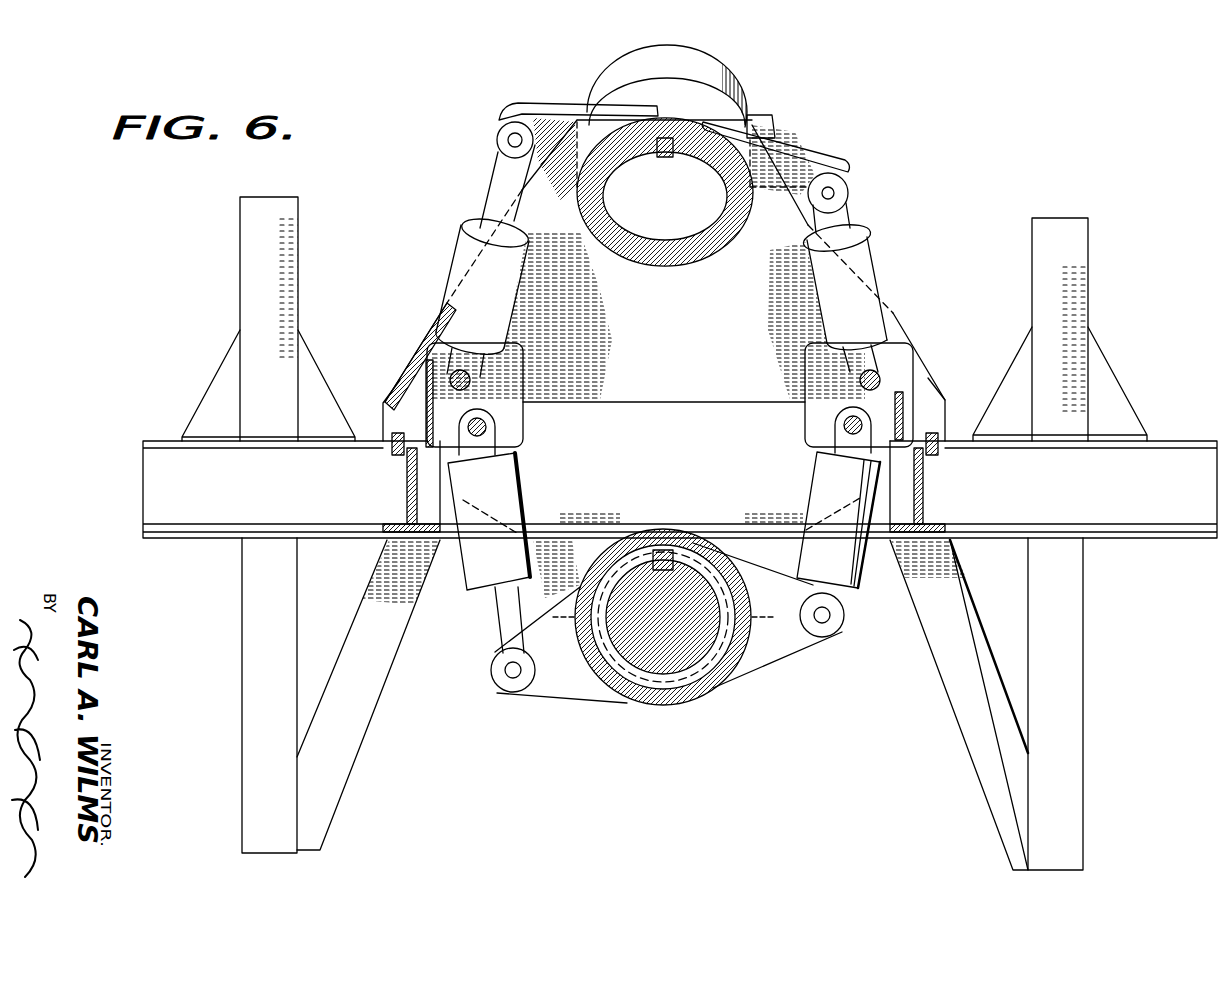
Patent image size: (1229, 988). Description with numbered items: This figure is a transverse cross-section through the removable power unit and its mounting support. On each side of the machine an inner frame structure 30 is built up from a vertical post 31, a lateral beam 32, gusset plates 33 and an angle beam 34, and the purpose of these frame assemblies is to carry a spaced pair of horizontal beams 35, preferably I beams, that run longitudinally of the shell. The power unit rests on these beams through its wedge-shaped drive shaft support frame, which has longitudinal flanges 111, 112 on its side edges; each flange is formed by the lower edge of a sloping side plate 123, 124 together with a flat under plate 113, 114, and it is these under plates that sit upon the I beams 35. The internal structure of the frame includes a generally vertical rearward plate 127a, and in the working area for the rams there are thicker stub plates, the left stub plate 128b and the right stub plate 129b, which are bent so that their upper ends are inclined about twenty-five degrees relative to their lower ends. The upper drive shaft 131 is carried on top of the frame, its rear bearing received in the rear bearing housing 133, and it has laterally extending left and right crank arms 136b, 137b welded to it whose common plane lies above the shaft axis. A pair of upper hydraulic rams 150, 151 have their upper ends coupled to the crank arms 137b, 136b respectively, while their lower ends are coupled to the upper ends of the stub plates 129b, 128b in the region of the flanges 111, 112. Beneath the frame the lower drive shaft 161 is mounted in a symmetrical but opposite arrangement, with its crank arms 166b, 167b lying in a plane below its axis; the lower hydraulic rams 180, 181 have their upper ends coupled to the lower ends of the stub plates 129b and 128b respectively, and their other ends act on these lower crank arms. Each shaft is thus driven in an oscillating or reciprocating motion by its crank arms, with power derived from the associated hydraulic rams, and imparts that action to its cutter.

The inner frame structure 30 is at (200, 270).
The vertical post 31 is at (1055, 252).
The lateral beam 32 is at (148, 497).
The gusset plate 33 is at (313, 428).
The angle beam 34 is at (320, 797).
The horizontal beam 35 is at (410, 508).
The longitudinal flange 111 is at (388, 413).
The longitudinal flange 112 is at (918, 398).
The under plate 113 is at (415, 472).
The under plate 114 is at (900, 450).
The sloping side plate 123 is at (440, 343).
The sloping side plate 124 is at (890, 340).
The rearward plate 127a is at (738, 350).
The stub plate 128b is at (802, 423).
The stub plate 129b is at (513, 423).
The upper drive shaft 131 is at (702, 210).
The rear bearing housing 133 is at (693, 54).
The left crank arm 136b is at (796, 158).
The right crank arm 137b is at (526, 103).
The upper hydraulic ram 150 is at (462, 228).
The upper hydraulic ram 151 is at (870, 233).
The lower drive shaft 161 is at (680, 560).
The crank arm of lower drive shaft 166b is at (770, 653).
The crank arm of lower drive shaft 167b is at (533, 700).
The lower hydraulic ram 180 is at (476, 580).
The lower hydraulic ram 181 is at (867, 578).